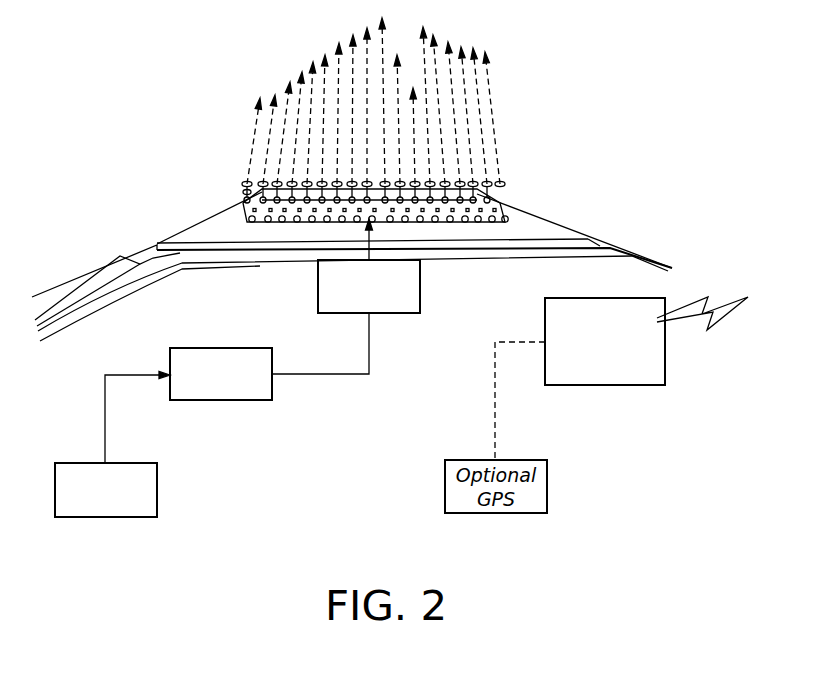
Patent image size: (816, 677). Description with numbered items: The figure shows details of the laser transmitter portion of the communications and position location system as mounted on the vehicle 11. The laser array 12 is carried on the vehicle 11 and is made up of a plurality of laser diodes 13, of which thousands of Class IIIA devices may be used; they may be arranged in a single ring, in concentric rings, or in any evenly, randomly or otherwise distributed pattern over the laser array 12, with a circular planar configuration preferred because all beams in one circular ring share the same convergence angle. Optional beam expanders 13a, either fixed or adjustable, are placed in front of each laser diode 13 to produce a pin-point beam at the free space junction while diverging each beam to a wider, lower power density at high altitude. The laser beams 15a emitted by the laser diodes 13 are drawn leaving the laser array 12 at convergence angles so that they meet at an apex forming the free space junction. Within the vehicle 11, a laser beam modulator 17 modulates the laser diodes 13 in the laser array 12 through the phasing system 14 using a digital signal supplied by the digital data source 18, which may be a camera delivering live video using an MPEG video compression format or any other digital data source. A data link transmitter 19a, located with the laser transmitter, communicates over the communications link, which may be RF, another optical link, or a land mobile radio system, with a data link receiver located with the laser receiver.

The vehicle 11 is at (117, 255).
The laser array 12 is at (567, 228).
The laser diodes 13 is at (256, 217).
The beam expanders 13a is at (244, 190).
The phasing system 14 is at (420, 285).
The phased array beams 15a is at (220, 148).
The laser beam modulator 17 is at (257, 402).
The digital data source 18 is at (157, 493).
The data link transmitter 19a is at (643, 385).